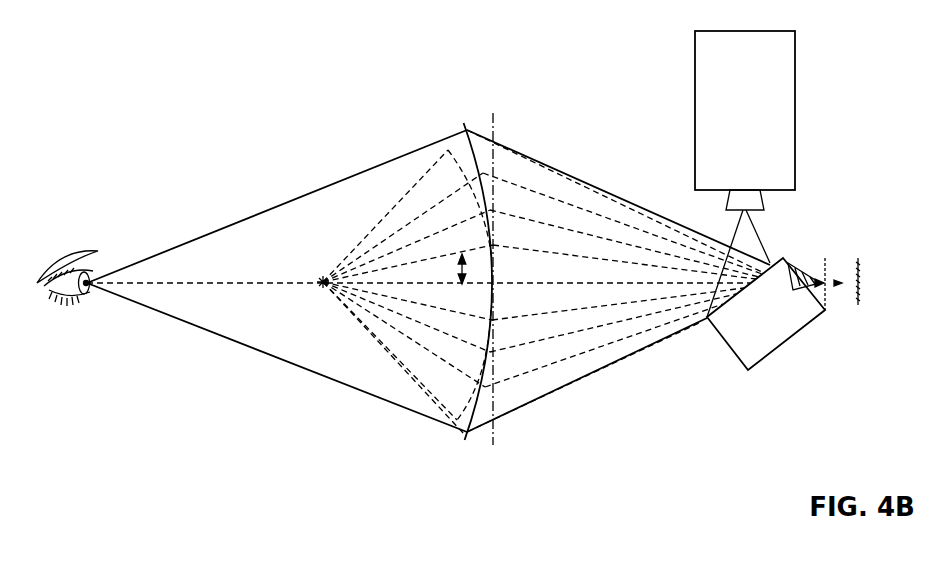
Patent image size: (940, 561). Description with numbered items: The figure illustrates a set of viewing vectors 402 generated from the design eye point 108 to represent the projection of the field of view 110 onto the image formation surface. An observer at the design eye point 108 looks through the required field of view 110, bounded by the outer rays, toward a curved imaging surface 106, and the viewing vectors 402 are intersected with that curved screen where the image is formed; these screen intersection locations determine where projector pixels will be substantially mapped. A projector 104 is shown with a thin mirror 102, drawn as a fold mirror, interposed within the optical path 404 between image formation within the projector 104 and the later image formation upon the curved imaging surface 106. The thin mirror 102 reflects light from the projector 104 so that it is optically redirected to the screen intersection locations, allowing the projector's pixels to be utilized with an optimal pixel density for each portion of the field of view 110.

The thin mirror 102 is at (788, 345).
The projector 104 is at (796, 145).
The imaging surface 106 is at (487, 406).
The design eye point 108 is at (68, 298).
The field of view 110 is at (172, 247).
The viewing vectors 402 is at (560, 360).
The optical path 404 is at (722, 263).